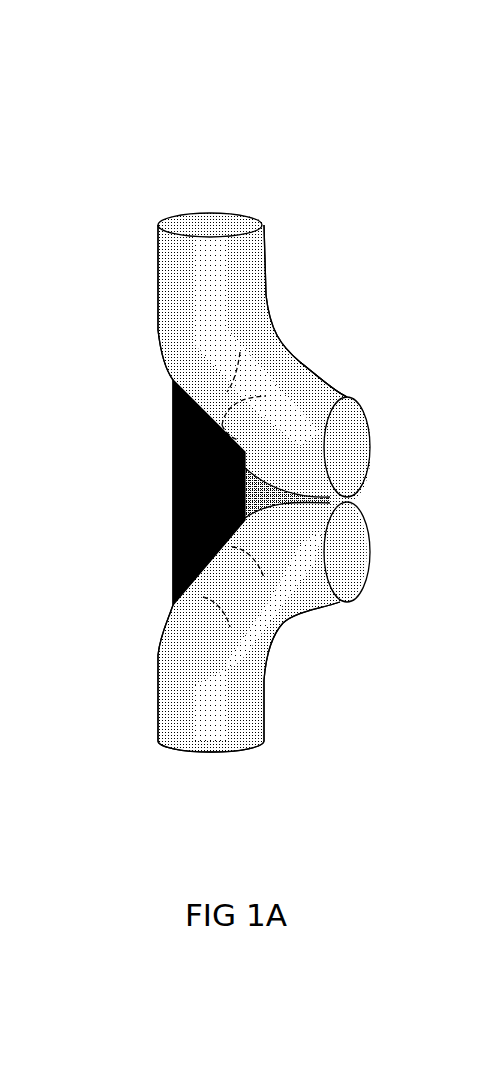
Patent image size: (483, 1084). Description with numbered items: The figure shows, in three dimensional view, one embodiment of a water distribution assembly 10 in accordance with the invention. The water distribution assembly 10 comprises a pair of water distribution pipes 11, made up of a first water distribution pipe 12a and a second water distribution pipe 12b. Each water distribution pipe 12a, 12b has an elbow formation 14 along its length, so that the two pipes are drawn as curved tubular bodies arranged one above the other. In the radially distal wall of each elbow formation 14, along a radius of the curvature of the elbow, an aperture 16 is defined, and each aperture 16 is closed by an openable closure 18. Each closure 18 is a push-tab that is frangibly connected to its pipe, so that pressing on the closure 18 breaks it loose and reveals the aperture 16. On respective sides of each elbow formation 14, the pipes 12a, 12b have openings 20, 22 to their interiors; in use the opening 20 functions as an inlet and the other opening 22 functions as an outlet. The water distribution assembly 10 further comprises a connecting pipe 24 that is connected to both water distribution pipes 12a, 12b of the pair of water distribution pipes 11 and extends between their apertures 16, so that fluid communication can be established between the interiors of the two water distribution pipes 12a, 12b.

The water distribution assembly 10 is at (282, 451).
The pair of water distribution pipes 11 is at (397, 332).
The water distribution pipe 12a is at (157, 263).
The water distribution pipe 12b is at (158, 680).
The elbow formation 14 is at (299, 331).
The aperture 16 is at (230, 496).
The openable closure 18 is at (262, 505).
The opening 20 is at (218, 220).
The opening 22 is at (360, 456).
The connecting pipe 24 is at (172, 475).